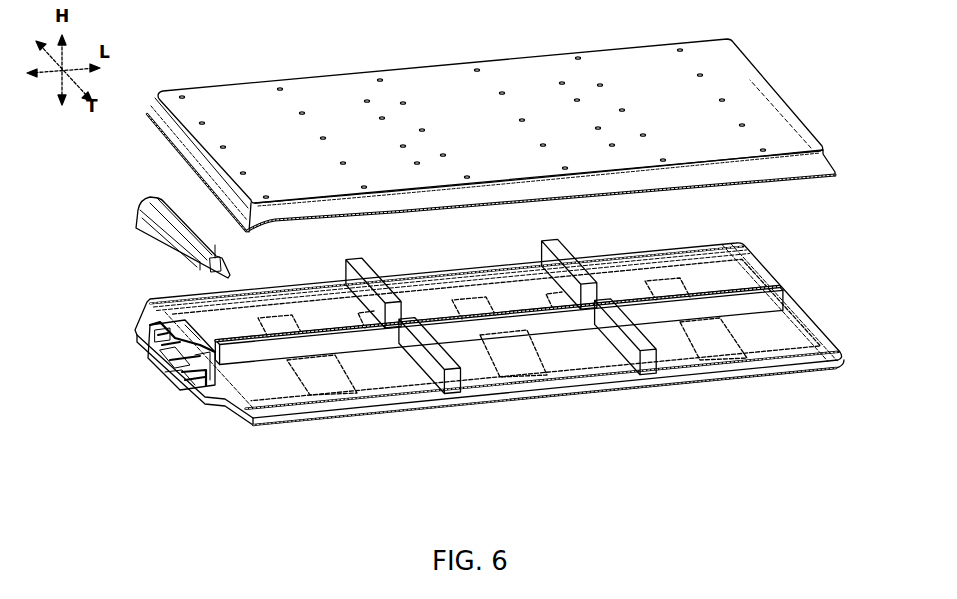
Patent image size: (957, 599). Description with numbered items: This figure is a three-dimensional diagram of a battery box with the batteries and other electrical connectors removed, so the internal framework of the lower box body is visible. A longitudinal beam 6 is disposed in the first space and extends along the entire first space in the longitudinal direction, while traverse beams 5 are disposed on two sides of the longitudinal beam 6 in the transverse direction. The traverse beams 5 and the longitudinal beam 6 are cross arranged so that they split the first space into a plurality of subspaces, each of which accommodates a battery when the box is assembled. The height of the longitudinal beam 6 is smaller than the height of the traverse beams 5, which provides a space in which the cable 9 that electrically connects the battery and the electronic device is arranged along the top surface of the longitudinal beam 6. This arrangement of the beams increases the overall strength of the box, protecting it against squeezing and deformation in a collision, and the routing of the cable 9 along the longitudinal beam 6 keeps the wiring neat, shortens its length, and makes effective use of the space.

The traverse beams 5 is at (429, 379).
The longitudinal beam 6 is at (778, 301).
The cable 9 is at (781, 289).